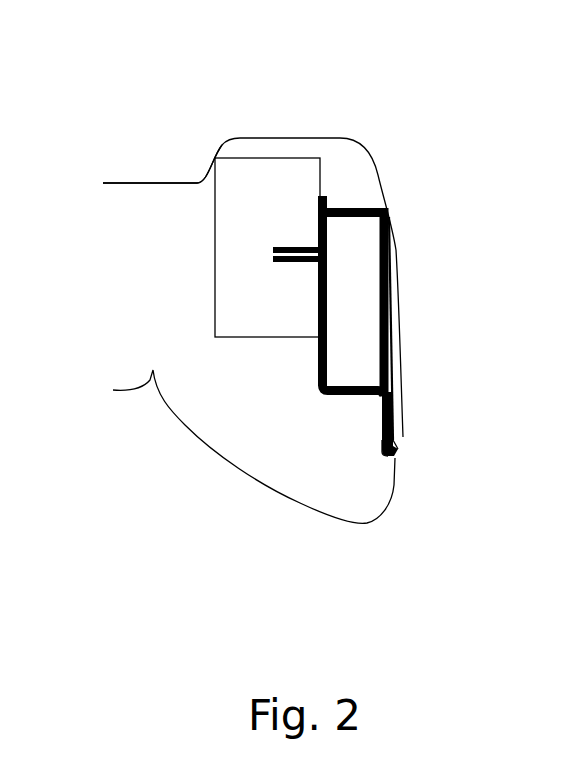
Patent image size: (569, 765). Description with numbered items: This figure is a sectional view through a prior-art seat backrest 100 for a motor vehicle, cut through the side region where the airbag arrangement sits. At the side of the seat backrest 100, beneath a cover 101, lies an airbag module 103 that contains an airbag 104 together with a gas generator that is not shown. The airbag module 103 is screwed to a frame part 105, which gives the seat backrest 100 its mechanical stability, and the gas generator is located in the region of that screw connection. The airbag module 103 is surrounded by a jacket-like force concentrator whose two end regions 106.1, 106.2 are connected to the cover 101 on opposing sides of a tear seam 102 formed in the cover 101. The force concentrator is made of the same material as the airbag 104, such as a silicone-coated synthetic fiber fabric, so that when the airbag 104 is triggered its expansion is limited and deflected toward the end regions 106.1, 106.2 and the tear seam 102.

The seat backrest 100 is at (367, 123).
The cover 101 is at (223, 143).
The tear seam 102 is at (402, 448).
The airbag module 103 is at (389, 262).
The airbag 104 is at (383, 297).
The frame part 105 is at (267, 158).
The first end region of force concentrator 106.1 is at (372, 447).
The second end region of force concentrator 106.2 is at (403, 441).